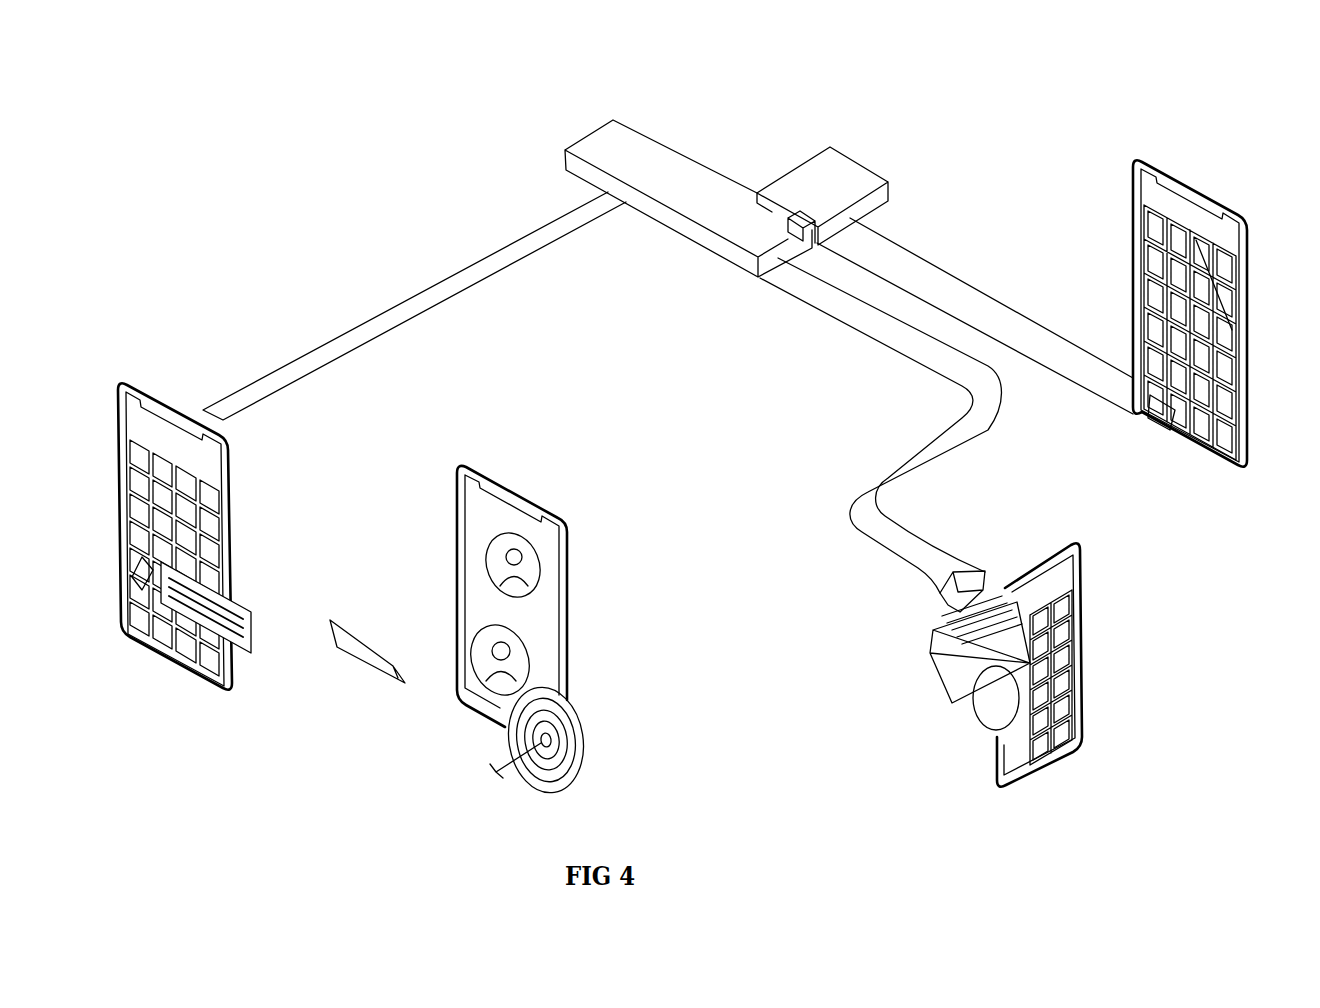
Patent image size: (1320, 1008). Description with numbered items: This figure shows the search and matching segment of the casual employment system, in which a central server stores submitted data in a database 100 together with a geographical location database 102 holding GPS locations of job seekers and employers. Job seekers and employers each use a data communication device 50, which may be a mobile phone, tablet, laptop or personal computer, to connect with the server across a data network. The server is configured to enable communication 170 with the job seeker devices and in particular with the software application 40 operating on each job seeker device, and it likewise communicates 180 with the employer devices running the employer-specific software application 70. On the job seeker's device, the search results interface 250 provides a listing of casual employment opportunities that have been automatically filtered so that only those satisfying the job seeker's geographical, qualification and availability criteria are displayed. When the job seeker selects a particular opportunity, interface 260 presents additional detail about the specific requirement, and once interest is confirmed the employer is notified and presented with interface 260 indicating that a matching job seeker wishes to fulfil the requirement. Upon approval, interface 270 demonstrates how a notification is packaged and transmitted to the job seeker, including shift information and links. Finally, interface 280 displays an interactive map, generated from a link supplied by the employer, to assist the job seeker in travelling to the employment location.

The database 100 is at (623, 146).
The geographical location database 102 is at (862, 177).
The communication 170 is at (457, 300).
The communication 180 is at (833, 318).
The data communication device 50 is at (238, 443).
The software application 40 is at (208, 461).
The software application 70 is at (546, 538).
The search results interface 250 is at (198, 668).
The interface 260 is at (544, 667).
The interface 270 is at (1064, 741).
The interface 280 is at (1221, 449).